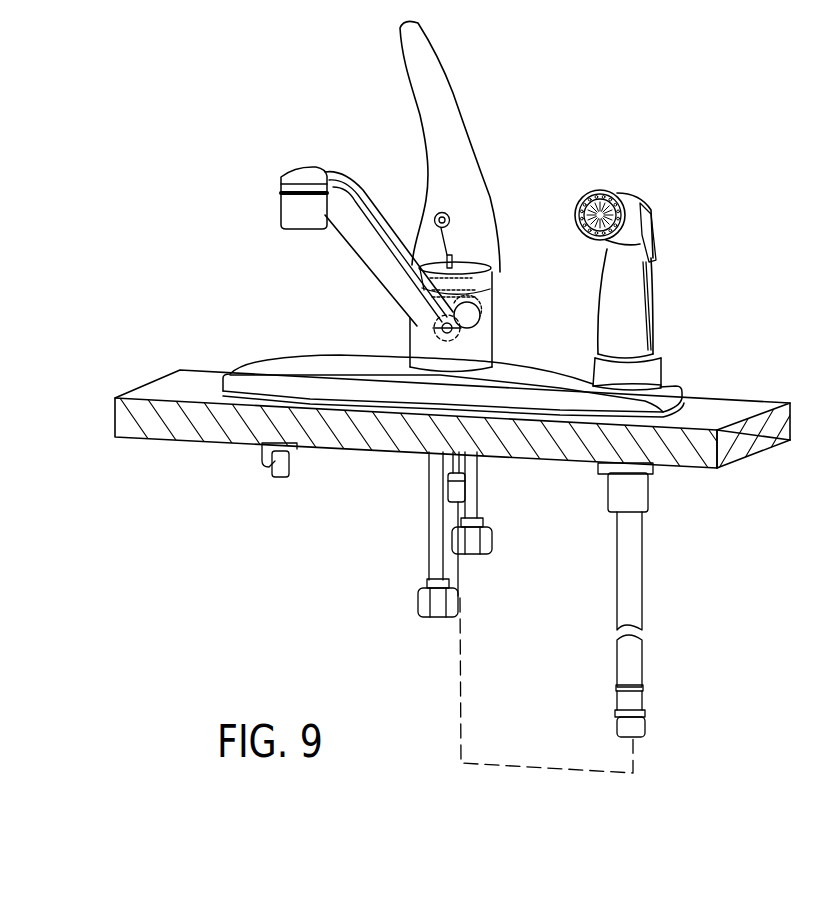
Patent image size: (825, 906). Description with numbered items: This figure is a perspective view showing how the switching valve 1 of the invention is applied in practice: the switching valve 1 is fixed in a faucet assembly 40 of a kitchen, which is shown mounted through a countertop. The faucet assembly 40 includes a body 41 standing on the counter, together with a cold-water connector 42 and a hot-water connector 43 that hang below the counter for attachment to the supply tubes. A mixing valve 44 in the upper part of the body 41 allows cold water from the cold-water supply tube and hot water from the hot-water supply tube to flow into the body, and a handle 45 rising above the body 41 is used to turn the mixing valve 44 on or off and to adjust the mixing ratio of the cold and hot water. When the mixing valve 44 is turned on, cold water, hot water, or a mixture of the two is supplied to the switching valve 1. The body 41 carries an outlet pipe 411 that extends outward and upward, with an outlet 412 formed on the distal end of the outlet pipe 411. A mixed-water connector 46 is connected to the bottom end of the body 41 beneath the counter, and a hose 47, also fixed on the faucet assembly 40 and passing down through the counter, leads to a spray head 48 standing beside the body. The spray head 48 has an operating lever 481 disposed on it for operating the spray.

The switching valve 1 is at (485, 316).
The faucet assembly 40 is at (555, 168).
The body 41 is at (418, 348).
The outlet pipe 411 is at (363, 187).
The outlet 412 is at (301, 233).
The cold-water connector 42 is at (487, 540).
The hot-water connector 43 is at (427, 606).
The mixing valve 44 is at (463, 265).
The handle 45 is at (445, 97).
The mixed-water connector 46 is at (452, 492).
The hose 47 is at (628, 577).
The spray head 48 is at (627, 312).
The operating lever 481 is at (651, 243).